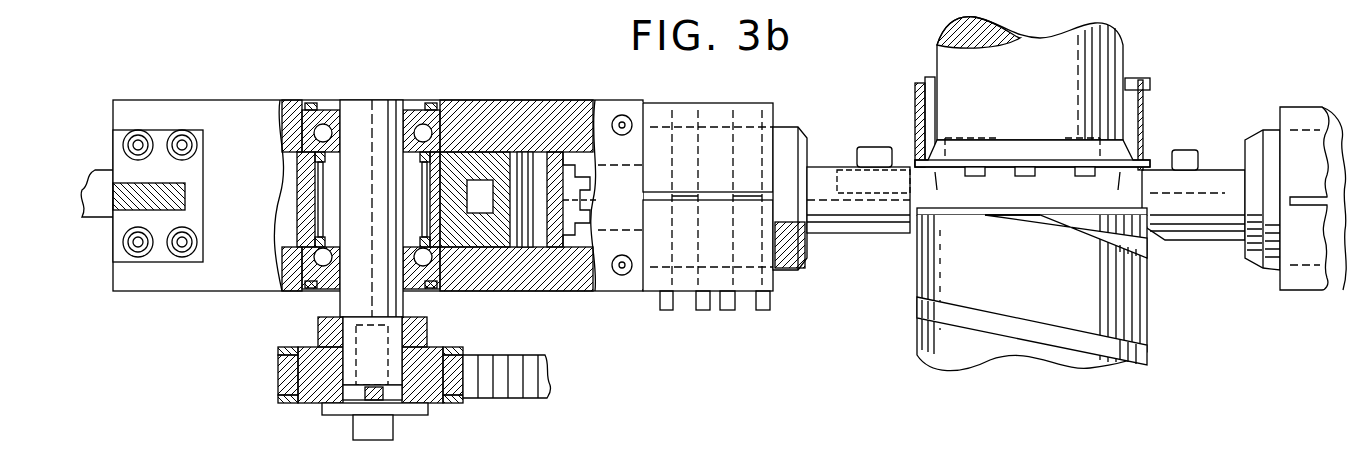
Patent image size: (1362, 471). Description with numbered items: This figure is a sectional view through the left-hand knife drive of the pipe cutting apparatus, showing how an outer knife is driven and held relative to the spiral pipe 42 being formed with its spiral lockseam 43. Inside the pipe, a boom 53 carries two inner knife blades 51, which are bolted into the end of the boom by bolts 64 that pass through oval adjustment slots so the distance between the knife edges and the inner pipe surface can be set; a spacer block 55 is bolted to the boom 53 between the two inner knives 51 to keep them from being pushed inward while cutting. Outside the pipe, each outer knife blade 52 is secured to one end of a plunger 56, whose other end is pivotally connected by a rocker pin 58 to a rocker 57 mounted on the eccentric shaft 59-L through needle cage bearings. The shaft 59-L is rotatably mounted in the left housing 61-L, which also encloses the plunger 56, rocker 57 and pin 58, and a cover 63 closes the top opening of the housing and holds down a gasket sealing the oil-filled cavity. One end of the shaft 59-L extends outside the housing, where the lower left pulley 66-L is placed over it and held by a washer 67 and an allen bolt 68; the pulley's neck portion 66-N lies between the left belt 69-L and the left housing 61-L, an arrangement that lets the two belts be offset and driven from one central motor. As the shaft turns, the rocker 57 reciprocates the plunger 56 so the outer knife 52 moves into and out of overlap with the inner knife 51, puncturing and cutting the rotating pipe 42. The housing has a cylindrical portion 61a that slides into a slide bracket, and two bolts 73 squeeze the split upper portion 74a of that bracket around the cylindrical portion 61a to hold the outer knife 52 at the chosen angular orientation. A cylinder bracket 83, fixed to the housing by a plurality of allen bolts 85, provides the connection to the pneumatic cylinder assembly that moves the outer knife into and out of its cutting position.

The spiral pipe 42 is at (1025, 352).
The spiral lockseam 43 is at (1148, 250).
The inner knife blades 51 is at (1030, 185).
The outer knife blades 52 is at (870, 165).
The boom 53 is at (1046, 95).
The spacer block 55 is at (1005, 170).
The plunger 56 is at (835, 235).
The rocker 57 is at (483, 160).
The rocker pin 58 is at (527, 250).
The eccentric shaft 59-L is at (372, 100).
The left housing 61-L is at (560, 100).
The cylindrical portion 61a is at (790, 135).
The cover 63 is at (610, 105).
The bolts 64 is at (1062, 212).
The neck portion 66-N is at (427, 330).
The lower left pulley 66-L is at (440, 400).
The washer 67 is at (328, 410).
The allen bolt 68 is at (385, 425).
The left belt 69-L is at (535, 398).
The bolts 73 is at (738, 312).
The split upper portion 74a is at (800, 262).
The cylinder bracket 83 is at (160, 255).
The allen bolts 85 is at (150, 135).